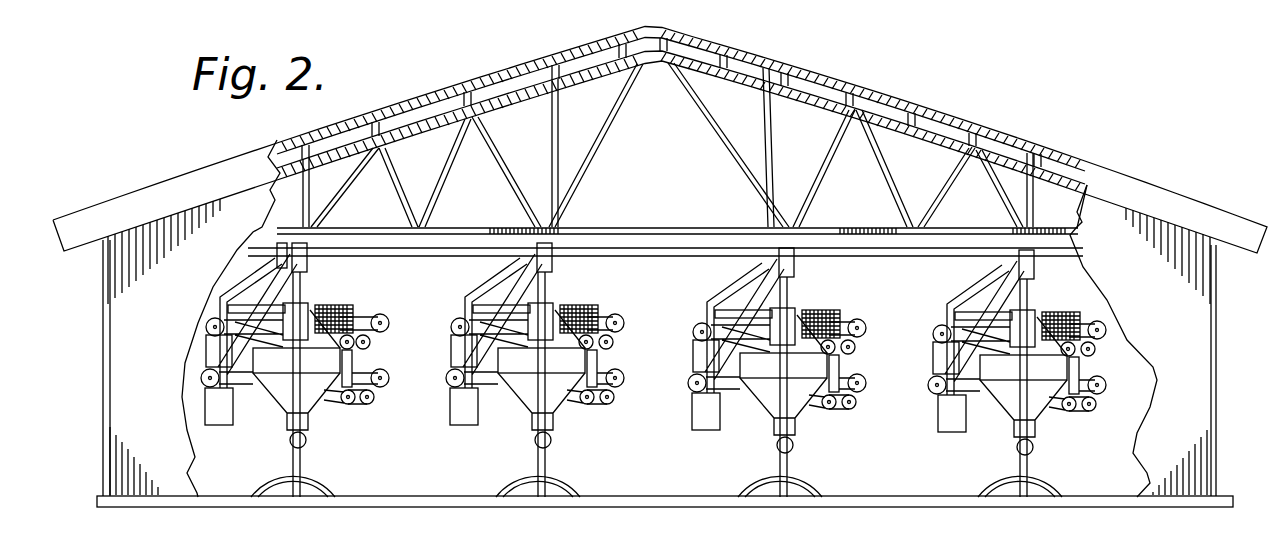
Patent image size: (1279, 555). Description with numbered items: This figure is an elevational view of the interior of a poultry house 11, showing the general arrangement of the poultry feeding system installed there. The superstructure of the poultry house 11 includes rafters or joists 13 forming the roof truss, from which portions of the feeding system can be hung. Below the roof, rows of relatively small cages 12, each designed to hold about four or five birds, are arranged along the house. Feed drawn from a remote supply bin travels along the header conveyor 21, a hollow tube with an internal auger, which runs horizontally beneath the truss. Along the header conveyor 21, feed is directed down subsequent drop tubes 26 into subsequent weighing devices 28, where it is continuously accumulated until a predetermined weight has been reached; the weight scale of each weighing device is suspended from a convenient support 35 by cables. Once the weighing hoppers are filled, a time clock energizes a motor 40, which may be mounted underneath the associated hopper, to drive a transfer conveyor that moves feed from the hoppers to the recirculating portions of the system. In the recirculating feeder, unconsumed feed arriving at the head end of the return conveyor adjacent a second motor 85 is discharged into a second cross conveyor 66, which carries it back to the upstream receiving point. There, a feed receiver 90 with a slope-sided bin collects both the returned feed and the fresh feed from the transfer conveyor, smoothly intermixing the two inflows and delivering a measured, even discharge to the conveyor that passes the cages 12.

The poultry house 11 is at (1118, 182).
The cages 12 is at (340, 306).
The rafters or joists 13 is at (713, 133).
The header conveyor 21 is at (643, 248).
The subsequent drop tubes 26 is at (306, 291).
The subsequent weighing devices 28 is at (272, 410).
The support 35 is at (292, 458).
The motor 40 is at (306, 443).
The second cross conveyor 66 is at (332, 402).
The second motor 85 is at (373, 398).
The feed receiver 90 is at (204, 407).